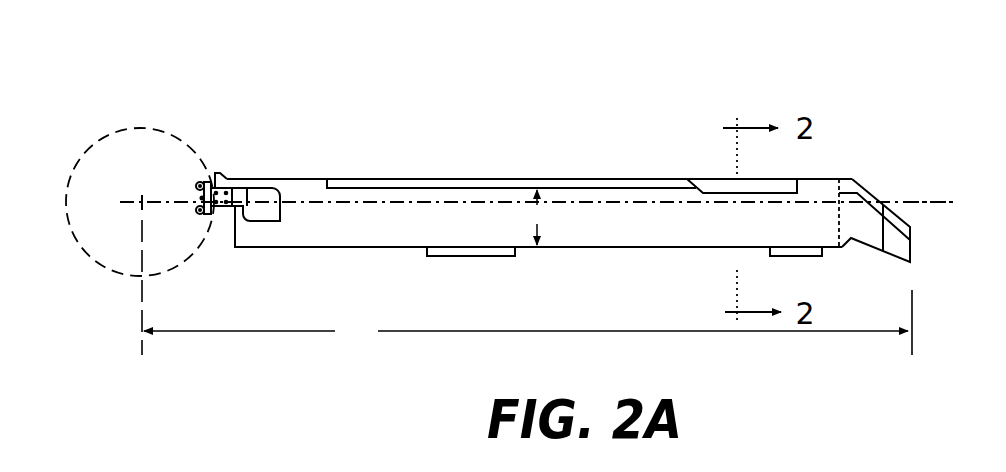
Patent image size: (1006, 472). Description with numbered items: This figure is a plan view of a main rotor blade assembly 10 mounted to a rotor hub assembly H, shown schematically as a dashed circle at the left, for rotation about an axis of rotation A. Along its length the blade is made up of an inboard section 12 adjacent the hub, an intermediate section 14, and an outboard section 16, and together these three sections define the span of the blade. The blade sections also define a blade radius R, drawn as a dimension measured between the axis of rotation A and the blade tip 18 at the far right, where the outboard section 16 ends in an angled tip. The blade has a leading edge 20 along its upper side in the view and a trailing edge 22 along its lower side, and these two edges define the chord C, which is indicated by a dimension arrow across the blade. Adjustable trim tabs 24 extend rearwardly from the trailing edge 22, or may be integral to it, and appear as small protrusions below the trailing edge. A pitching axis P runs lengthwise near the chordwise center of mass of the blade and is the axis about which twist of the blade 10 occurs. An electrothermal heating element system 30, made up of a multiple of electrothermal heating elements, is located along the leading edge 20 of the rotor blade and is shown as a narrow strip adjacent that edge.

The main rotor blade assembly 10 is at (590, 168).
The inboard section 12 is at (270, 153).
The intermediate section 14 is at (522, 150).
The outboard section 16 is at (839, 177).
The blade tip 18 is at (912, 238).
The leading edge 20 is at (563, 180).
The trailing edge 22 is at (632, 246).
The adjustable trim tabs 24 is at (485, 257).
The electrothermal heating element system 30 is at (353, 183).
The rotor hub assembly H is at (83, 150).
The axis of rotation A is at (140, 203).
The pitching axis P is at (913, 202).
The chord C is at (537, 217).
The blade radius R is at (528, 322).